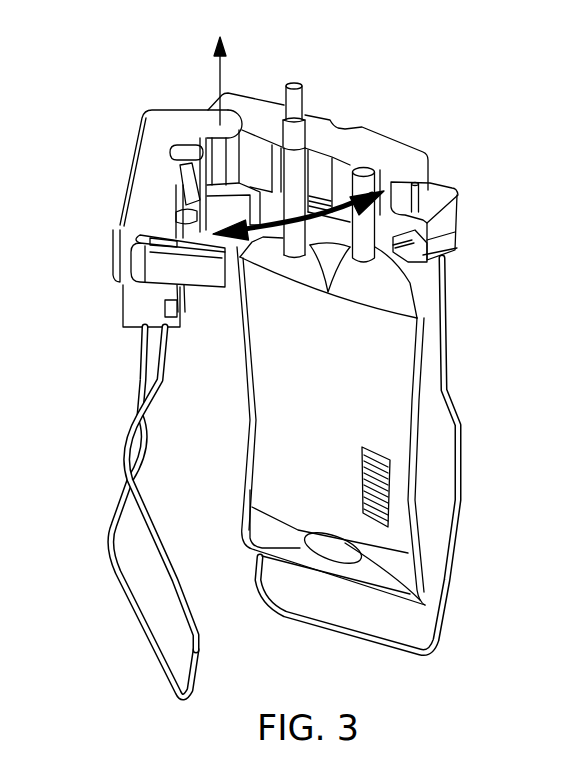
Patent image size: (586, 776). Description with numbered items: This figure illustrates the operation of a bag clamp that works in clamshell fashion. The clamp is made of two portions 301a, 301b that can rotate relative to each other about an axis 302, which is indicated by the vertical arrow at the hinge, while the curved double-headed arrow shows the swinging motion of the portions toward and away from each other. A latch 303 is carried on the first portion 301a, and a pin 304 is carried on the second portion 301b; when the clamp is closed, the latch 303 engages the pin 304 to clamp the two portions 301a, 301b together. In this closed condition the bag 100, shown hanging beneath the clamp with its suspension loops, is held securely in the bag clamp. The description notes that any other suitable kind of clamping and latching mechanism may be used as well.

The bag 100 is at (390, 373).
The first portion of bag clamp 301a is at (143, 150).
The second portion of bag clamp 301b is at (390, 150).
The axis 302 is at (217, 83).
The latch 303 is at (204, 280).
The pin 304 is at (450, 185).